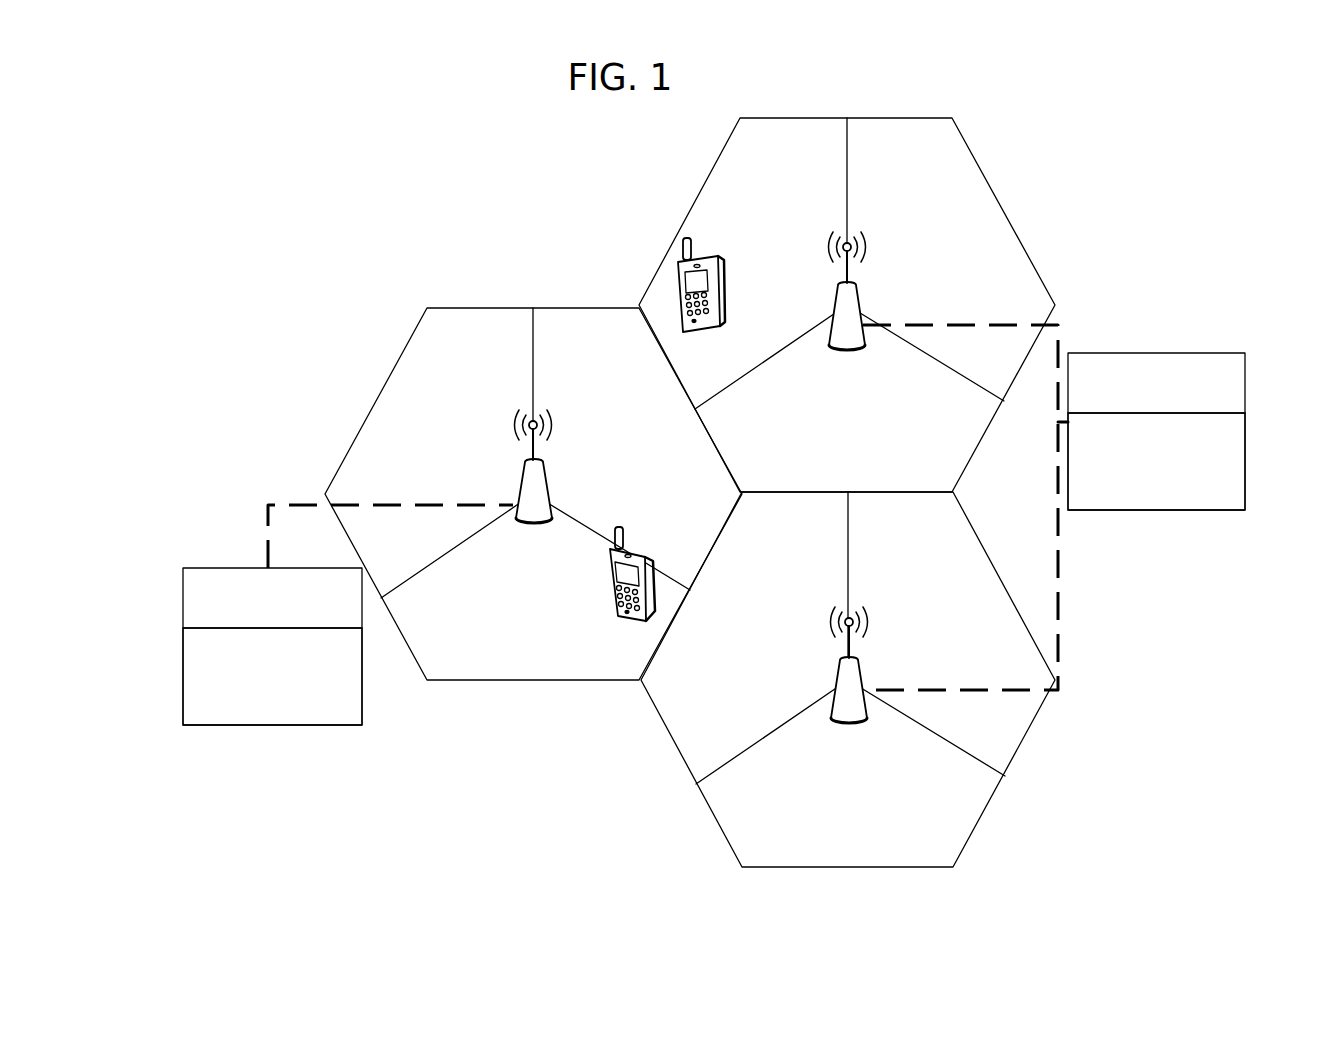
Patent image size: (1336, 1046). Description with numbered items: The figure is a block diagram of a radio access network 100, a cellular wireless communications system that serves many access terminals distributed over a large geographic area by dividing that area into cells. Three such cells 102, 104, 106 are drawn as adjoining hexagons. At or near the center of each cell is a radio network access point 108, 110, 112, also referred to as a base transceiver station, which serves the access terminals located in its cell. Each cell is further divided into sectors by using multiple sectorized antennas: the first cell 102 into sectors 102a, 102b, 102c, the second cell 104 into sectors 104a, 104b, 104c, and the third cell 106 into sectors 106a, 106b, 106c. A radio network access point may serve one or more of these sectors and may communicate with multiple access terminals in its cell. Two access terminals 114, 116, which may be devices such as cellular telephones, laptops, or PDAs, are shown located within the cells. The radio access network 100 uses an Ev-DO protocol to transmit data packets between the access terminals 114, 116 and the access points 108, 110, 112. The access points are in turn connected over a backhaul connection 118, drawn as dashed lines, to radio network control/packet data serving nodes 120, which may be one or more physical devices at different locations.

The radio access network 100 is at (466, 197).
The cell 102 is at (376, 379).
The sector 102a is at (410, 456).
The sector 102b is at (587, 456).
The sector 102c is at (562, 655).
The cell 104 is at (991, 172).
The sector 104a is at (747, 250).
The sector 104b is at (918, 263).
The sector 104c is at (838, 431).
The cell 106 is at (671, 777).
The sector 106a is at (745, 611).
The sector 106b is at (915, 638).
The sector 106c is at (832, 825).
The radio network access point 108 is at (520, 521).
The radio network access point 110 is at (830, 346).
The radio network access point 112 is at (836, 718).
The access terminal 114 is at (721, 327).
The access terminal 116 is at (608, 612).
The backhaul connection 118 is at (263, 528).
The radio network control/packet data serving node 120 is at (714, 569).